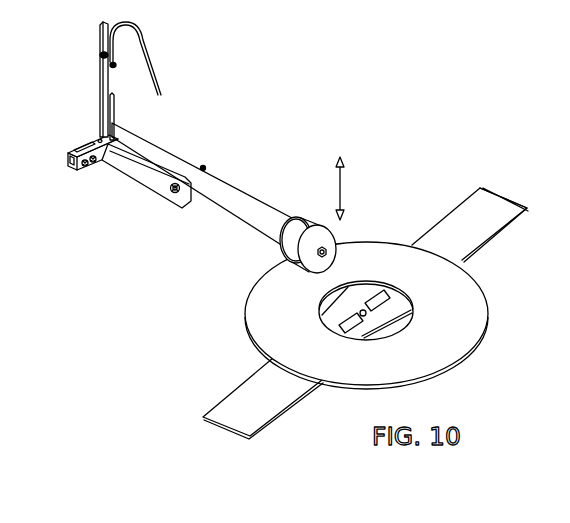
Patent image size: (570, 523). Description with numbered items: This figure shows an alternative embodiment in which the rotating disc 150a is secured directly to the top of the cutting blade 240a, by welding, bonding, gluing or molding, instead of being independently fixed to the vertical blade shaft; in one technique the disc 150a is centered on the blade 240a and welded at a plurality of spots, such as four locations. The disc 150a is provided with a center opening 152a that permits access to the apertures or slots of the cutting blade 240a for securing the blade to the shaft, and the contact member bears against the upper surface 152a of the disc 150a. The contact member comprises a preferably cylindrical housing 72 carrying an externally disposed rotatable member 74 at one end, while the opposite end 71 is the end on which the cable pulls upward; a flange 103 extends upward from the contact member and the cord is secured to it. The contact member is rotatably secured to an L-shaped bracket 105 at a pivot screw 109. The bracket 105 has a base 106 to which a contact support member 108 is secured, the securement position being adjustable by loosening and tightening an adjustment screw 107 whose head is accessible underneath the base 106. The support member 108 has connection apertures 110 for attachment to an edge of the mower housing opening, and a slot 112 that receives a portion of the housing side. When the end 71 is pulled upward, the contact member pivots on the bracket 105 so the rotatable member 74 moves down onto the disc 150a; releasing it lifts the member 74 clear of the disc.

The end of contact member 71 is at (115, 122).
The housing 72 is at (261, 206).
The rotatable member 74 is at (323, 222).
The flange 103 is at (113, 97).
The L-shaped bracket 105 is at (103, 72).
The base 106 is at (167, 175).
The adjustment screw 107 is at (82, 150).
The contact support member 108 is at (90, 146).
The pivot screw 109 is at (181, 178).
The connection apertures 110 is at (94, 166).
The slot 112 is at (84, 156).
The rotating disc 150a is at (395, 315).
The center opening 152a is at (468, 347).
The cutting blade 240a is at (473, 212).